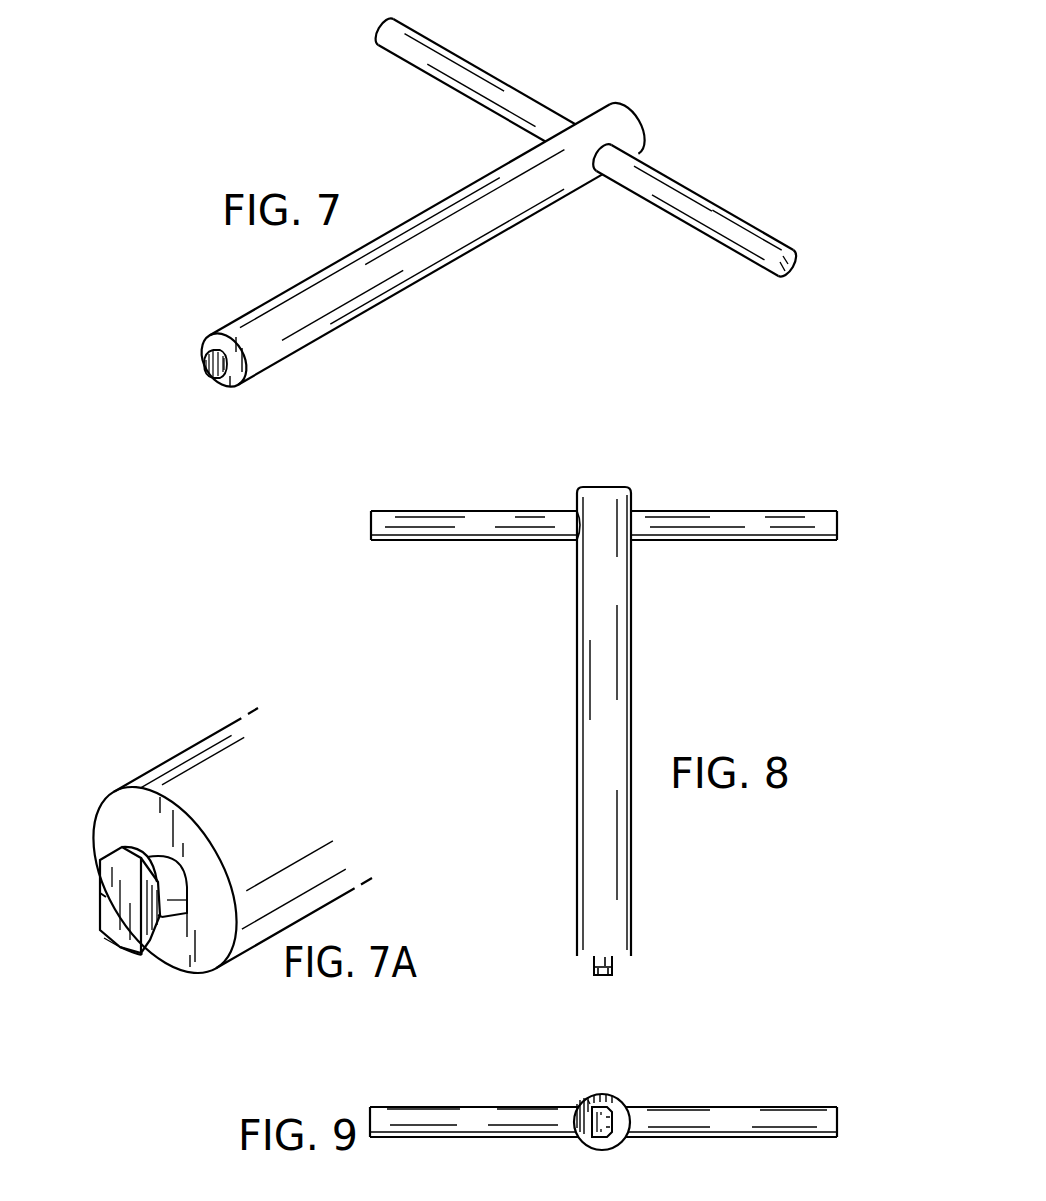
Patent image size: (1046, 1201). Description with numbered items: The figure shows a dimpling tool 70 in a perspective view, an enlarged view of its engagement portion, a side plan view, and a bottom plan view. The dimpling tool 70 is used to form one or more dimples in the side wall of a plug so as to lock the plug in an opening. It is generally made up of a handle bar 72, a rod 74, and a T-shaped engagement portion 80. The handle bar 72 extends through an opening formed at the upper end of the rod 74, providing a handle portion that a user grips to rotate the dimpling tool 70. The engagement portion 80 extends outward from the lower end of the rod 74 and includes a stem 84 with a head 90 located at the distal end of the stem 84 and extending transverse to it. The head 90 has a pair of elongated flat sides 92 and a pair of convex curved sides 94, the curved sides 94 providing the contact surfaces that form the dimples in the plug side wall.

In FIG. 7, the dimpling tool 70 is at (577, 261).
In FIG. 8, the dimpling tool 70 is at (657, 478).
In FIG. 9, the dimpling tool 70 is at (694, 1076).
In FIG. 7, the handle bar 72 is at (700, 202).
In FIG. 8, the handle bar 72 is at (715, 522).
In FIG. 9, the handle bar 72 is at (725, 1118).
In FIG. 7, the rod 74 is at (452, 250).
In FIG. 8, the rod 74 is at (623, 657).
In FIG. 9, the rod 74 is at (613, 1098).
In FIG. 7, the engagement portion 80 is at (193, 348).
In FIG. 7A, the engagement portion 80 is at (91, 868).
In FIG. 8, the engagement portion 80 is at (591, 975).
In FIG. 9, the engagement portion 80 is at (584, 1143).
In FIG. 7A, the stem 84 is at (178, 882).
In FIG. 8, the stem 84 is at (605, 955).
In FIG. 9, the stem 84 is at (585, 1095).
In FIG. 7, the head 90 is at (202, 381).
In FIG. 7A, the head 90 is at (115, 942).
In FIG. 8, the head 90 is at (602, 978).
In FIG. 9, the head 90 is at (612, 1139).
In FIG. 7A, the elongated flat sides 92 is at (99, 897).
In FIG. 8, the elongated flat sides 92 is at (595, 970).
In FIG. 7A, the convex curved sides 94 is at (133, 857).
In FIG. 8, the convex curved sides 94 is at (608, 975).